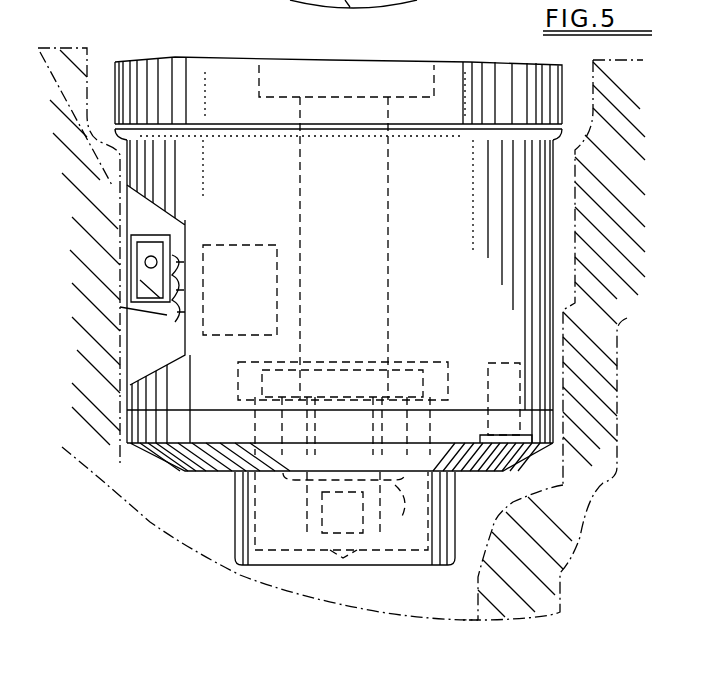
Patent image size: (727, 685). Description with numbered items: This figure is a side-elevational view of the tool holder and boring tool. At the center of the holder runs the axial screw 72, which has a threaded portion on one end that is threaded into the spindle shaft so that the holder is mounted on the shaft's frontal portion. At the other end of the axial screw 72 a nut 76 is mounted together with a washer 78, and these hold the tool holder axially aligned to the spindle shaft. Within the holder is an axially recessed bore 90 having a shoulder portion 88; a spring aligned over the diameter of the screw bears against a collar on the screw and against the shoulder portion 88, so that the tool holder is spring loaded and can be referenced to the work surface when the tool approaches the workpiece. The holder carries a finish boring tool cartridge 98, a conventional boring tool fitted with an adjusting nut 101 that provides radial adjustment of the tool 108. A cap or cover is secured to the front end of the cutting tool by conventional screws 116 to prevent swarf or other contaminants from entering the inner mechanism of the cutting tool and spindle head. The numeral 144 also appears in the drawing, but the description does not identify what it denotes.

The axial screw 72 is at (378, 273).
The nut 76 is at (341, 515).
The washer 78 is at (408, 375).
The shoulder portion 88 is at (410, 97).
The axially recessed bore 90 is at (352, 72).
The finish boring tool cartridge 98 is at (230, 322).
The adjusting nut 101 is at (178, 262).
The tool 108 is at (140, 283).
The screws 116 is at (503, 377).
The base housing 144 is at (240, 547).